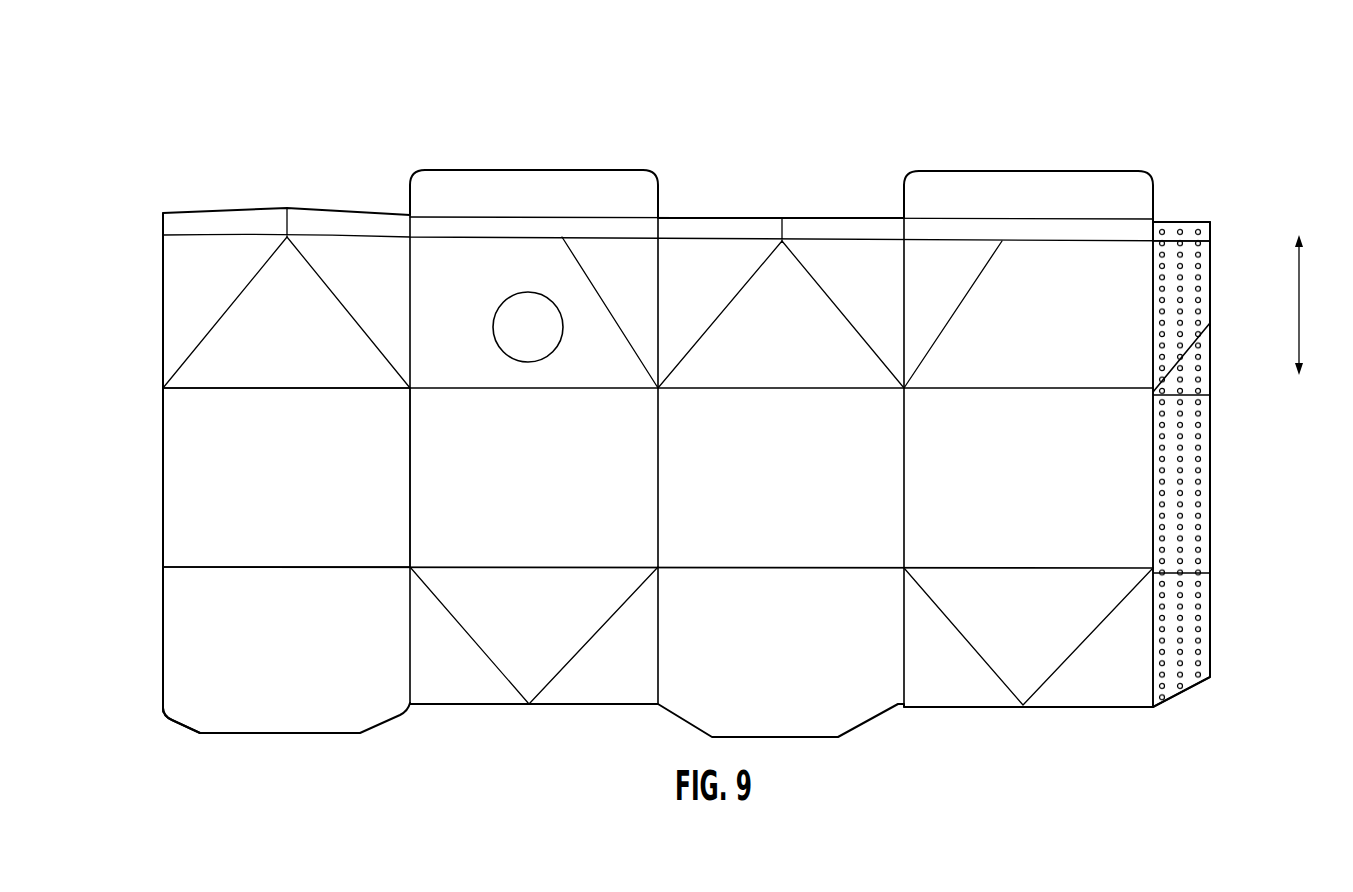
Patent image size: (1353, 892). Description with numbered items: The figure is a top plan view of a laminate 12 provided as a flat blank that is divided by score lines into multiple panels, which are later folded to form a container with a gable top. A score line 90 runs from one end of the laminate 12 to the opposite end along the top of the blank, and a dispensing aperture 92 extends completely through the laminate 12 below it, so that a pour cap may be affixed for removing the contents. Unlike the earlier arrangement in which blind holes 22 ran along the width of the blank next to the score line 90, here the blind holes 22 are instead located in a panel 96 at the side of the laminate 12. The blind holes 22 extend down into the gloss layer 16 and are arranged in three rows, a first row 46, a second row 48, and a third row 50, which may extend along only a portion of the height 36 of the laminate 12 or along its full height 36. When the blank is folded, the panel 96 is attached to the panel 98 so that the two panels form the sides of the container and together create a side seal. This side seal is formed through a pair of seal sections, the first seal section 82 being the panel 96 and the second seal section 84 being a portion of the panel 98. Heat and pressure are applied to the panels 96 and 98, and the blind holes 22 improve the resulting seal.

The laminate 12 is at (187, 126).
The gloss layer 16 is at (190, 427).
The blind holes 22 is at (1209, 636).
The height direction 36 is at (1299, 310).
The first row 46 is at (1196, 696).
The second row 48 is at (1172, 705).
The third row 50 is at (1157, 716).
The first seal section 82 is at (1210, 213).
The second seal section 84 is at (198, 738).
The score line 90 is at (737, 245).
The dispensing aperture 92 is at (533, 355).
The panel 96 is at (1209, 473).
The panel 98 is at (176, 513).